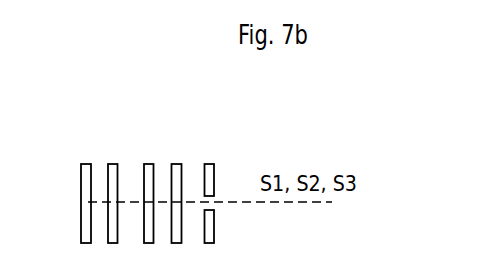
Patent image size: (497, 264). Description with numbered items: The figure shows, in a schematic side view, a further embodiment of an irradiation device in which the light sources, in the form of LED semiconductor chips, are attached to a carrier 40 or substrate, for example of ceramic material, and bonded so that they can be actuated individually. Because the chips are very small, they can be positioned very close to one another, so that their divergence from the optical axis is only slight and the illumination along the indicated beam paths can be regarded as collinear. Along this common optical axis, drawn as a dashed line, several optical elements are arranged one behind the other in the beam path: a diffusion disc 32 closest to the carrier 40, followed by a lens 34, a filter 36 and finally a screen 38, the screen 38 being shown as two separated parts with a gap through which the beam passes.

The carrier 40 is at (87, 170).
The diffusion disc 32 is at (112, 171).
The lens 34 is at (149, 177).
The filter 36 is at (178, 172).
The screen 38 is at (212, 171).